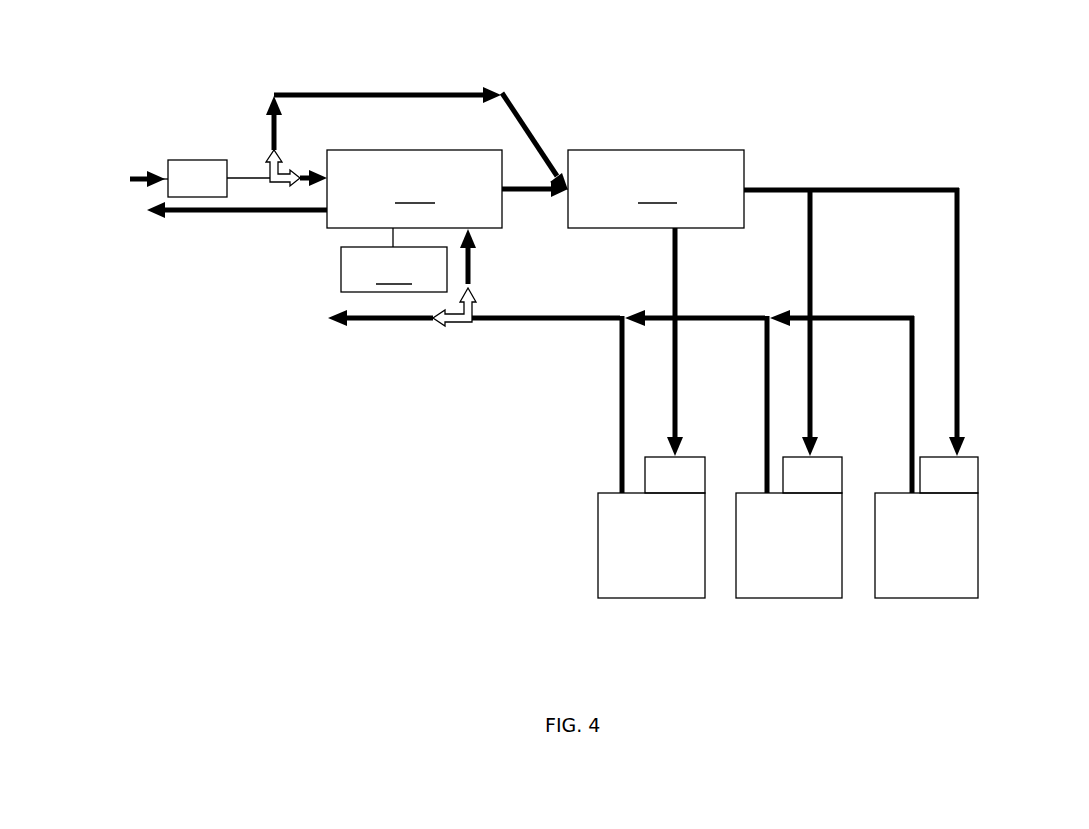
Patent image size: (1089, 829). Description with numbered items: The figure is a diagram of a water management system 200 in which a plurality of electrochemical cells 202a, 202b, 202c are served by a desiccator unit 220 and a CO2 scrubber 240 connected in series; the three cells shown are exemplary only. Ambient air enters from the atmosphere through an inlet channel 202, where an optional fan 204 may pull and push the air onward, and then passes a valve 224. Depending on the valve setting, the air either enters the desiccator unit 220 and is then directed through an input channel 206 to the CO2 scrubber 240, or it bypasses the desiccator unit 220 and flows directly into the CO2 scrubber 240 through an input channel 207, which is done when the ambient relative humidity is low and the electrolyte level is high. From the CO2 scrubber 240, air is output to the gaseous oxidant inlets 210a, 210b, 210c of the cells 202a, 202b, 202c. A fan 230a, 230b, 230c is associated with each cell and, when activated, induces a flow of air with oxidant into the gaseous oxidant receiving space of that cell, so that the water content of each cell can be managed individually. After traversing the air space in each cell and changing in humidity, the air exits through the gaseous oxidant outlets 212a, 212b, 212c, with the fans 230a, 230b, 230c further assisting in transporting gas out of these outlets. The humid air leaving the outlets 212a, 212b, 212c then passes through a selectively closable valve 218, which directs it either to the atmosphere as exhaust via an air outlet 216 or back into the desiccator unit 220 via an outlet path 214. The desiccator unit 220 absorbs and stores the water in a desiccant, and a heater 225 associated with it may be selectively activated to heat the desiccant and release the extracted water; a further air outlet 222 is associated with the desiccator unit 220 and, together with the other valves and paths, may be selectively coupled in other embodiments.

The water management system 200 is at (1010, 157).
The inlet channel 202 is at (150, 171).
The fan 204 is at (205, 160).
The input channel 206 is at (530, 192).
The input channel 207 is at (436, 90).
The gaseous oxidant inlet 210a is at (678, 347).
The gaseous oxidant inlet 210b is at (816, 347).
The gaseous oxidant inlet 210c is at (963, 347).
The gaseous oxidant outlet 212a is at (619, 390).
The gaseous oxidant outlet 212b is at (762, 379).
The gaseous oxidant outlet 212c is at (907, 379).
The outlet path 214 is at (474, 271).
The air outlet 216 is at (337, 326).
The selectively closable valve 218 is at (465, 325).
The desiccator unit 220 is at (414, 189).
The air outlet 222 is at (160, 218).
The valve 224 is at (280, 152).
The heater 225 is at (394, 260).
The fan 230a is at (718, 458).
The fan 230b is at (856, 457).
The fan 230c is at (994, 457).
The electrochemical cell 202a is at (615, 600).
The electrochemical cell 202b is at (750, 600).
The electrochemical cell 202c is at (888, 600).
The CO2 scrubber 240 is at (656, 189).